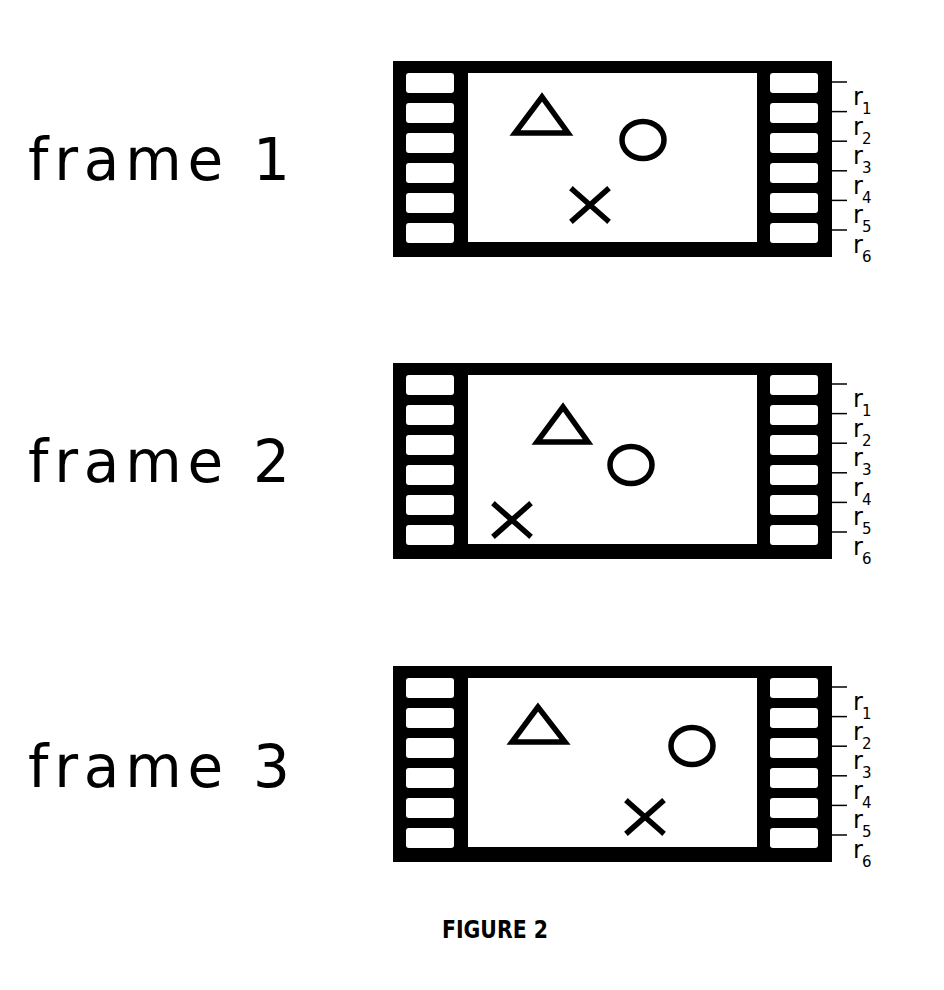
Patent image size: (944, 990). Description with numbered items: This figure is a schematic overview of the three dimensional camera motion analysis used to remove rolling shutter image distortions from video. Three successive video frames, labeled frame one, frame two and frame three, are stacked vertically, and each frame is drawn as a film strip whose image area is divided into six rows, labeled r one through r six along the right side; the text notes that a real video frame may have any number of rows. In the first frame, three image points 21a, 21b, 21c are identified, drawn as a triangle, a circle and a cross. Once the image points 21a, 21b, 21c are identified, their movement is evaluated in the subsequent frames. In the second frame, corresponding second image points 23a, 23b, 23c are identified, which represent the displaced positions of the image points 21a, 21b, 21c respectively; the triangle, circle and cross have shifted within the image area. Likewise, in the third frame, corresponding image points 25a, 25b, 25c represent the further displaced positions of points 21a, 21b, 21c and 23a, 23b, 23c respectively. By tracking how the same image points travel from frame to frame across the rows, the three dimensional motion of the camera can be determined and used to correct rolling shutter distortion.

The image point 21a is at (552, 112).
The image point 21b is at (665, 131).
The image point 21c is at (601, 207).
The corresponding second image point 23a is at (572, 411).
The corresponding second image point 23b is at (651, 452).
The corresponding second image point 23c is at (523, 522).
The corresponding image point 25a is at (547, 711).
The corresponding image point 25b is at (697, 725).
The corresponding image point 25c is at (657, 821).